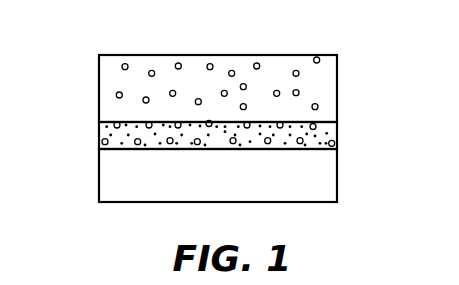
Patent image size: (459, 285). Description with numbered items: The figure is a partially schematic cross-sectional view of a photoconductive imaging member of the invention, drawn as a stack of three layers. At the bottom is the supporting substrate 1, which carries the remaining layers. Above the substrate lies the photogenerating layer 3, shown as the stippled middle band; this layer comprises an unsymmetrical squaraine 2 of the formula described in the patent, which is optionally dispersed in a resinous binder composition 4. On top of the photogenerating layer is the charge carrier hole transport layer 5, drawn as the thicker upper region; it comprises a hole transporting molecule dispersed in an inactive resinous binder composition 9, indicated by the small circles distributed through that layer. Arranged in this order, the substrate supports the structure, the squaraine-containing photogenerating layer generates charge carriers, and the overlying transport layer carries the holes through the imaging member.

The supporting substrate 1 is at (100, 181).
The unsymmetrical squaraine 2 is at (324, 125).
The photogenerating layer 3 is at (100, 131).
The resinous binder composition 4 is at (116, 121).
The charge carrier hole transport layer 5 is at (337, 71).
The inactive resinous binder composition 9 is at (126, 62).